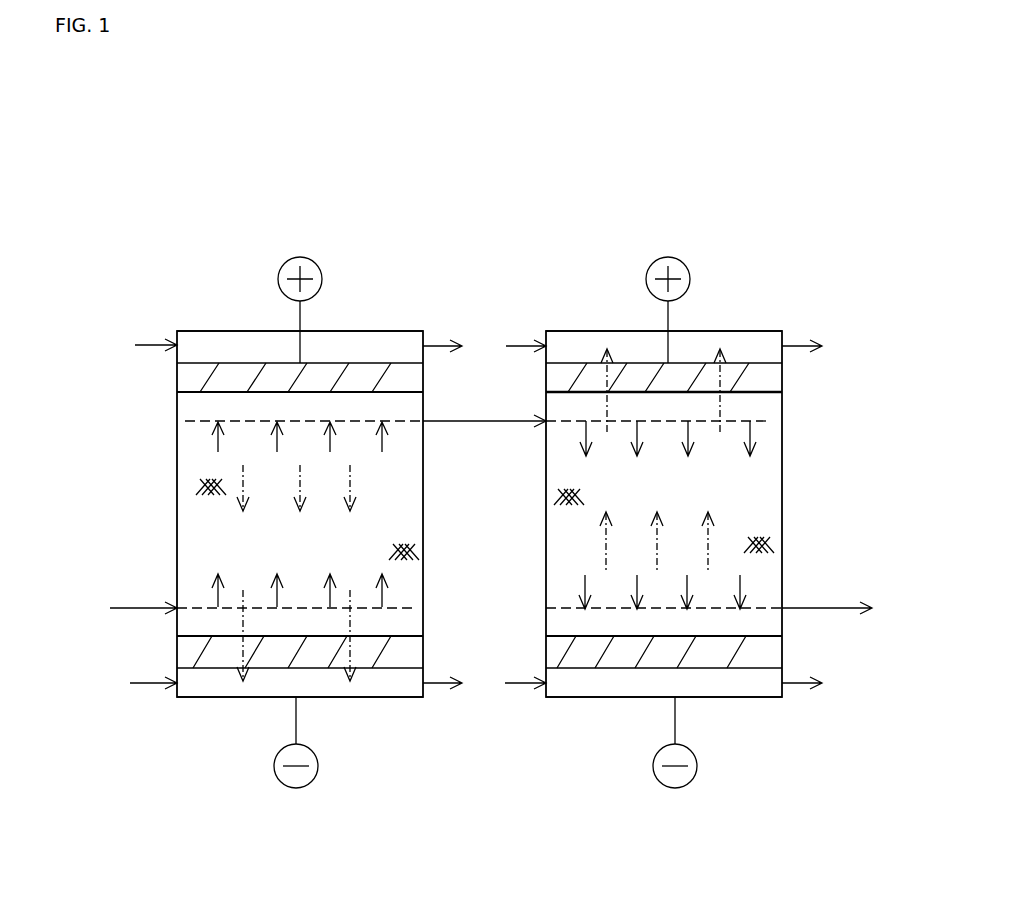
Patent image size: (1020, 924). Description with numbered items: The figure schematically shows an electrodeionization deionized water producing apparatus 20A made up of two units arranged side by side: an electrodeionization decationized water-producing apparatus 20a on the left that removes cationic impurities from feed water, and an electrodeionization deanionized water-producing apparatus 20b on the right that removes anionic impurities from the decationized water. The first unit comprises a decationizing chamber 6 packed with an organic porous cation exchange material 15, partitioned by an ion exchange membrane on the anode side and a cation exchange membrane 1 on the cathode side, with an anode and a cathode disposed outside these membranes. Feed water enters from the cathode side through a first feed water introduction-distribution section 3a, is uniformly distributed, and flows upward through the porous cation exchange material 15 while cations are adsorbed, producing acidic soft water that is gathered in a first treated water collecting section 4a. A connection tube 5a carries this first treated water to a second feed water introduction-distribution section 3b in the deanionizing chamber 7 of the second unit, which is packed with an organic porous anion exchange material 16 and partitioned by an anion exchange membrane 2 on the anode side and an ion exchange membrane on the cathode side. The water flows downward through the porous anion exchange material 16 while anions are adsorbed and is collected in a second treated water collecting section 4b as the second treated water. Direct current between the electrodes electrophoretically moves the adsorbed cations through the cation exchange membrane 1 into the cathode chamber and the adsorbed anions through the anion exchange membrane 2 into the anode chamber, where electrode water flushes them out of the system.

The electrodeionization deionized water producing apparatus 20A is at (553, 214).
The electrodeionization decationized water-producing apparatus 20a is at (402, 298).
The electrodeionization deanionized water-producing apparatus 20b is at (562, 298).
The cation exchange membrane 1 is at (412, 643).
The anion exchange membrane 2 is at (782, 394).
The first feed water introduction-distribution section 3a is at (398, 622).
The second feed water introduction-distribution section 3b is at (566, 422).
The first treated water collecting section 4a is at (408, 422).
The second treated water collecting section 4b is at (575, 615).
The connection tube 5a is at (467, 421).
The decationizing chamber 6 is at (404, 516).
The deanionizing chamber 7 is at (765, 471).
The organic porous cation exchange material 15 is at (190, 459).
The organic porous anion exchange material 16 is at (768, 500).